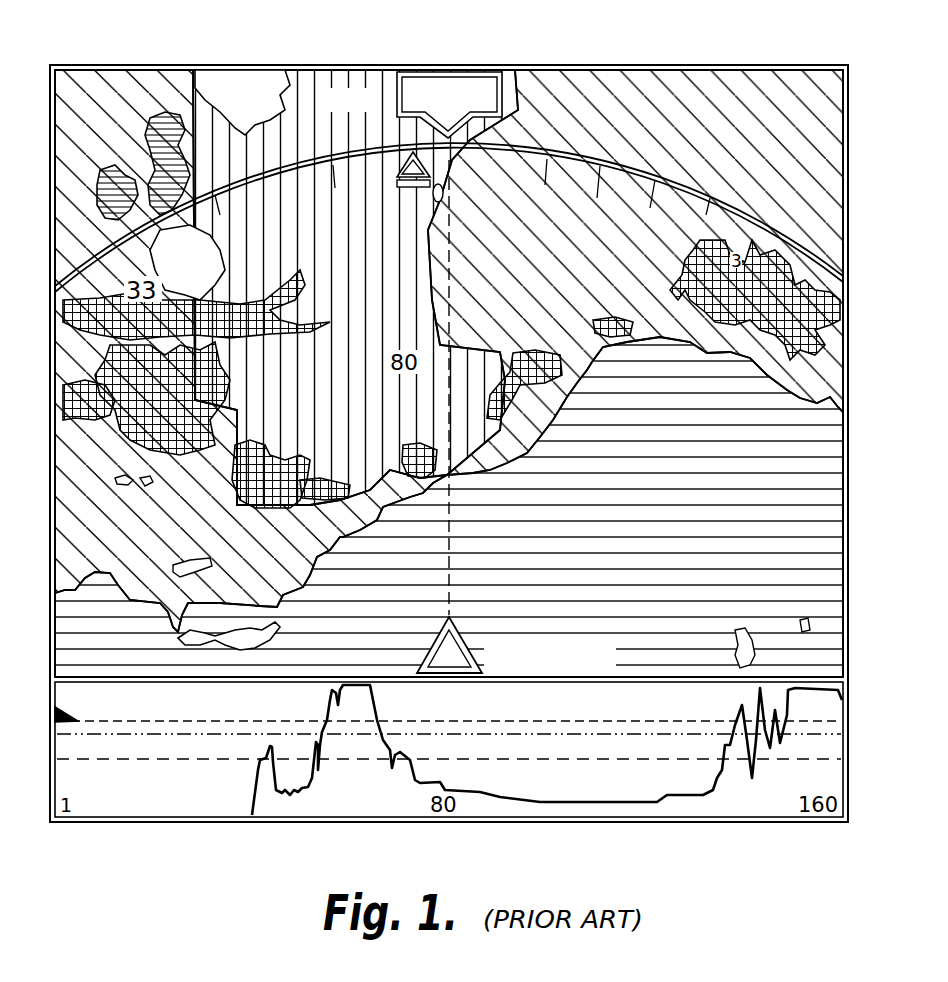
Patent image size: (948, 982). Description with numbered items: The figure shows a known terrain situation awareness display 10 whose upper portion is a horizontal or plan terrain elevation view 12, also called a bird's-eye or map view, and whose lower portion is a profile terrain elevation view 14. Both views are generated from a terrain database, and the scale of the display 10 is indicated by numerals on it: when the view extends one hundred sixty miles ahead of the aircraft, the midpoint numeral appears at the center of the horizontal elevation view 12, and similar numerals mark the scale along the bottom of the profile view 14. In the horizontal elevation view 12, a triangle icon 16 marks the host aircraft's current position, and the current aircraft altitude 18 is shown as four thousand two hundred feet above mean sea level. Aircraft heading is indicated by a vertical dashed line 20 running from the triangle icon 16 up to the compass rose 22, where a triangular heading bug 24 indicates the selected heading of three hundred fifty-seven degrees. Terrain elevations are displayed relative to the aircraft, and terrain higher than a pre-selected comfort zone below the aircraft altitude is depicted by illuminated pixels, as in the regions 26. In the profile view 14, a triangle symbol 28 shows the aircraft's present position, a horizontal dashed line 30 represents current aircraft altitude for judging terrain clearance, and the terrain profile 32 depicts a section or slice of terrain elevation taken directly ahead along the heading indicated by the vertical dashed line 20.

The terrain situation awareness display 10 is at (668, 822).
The horizontal terrain elevation view 12 is at (863, 65).
The profile terrain elevation view 14 is at (863, 682).
The triangle icon 16 is at (458, 675).
The current aircraft altitude 18 is at (528, 672).
The vertical dashed line 20 is at (452, 168).
The compass rose 22 is at (604, 157).
The triangular heading bug 24 is at (385, 166).
The regions 26 is at (715, 250).
The triangle symbol 28 is at (78, 722).
The horizontal dashed line 30 is at (157, 722).
The terrain profile 32 is at (312, 782).